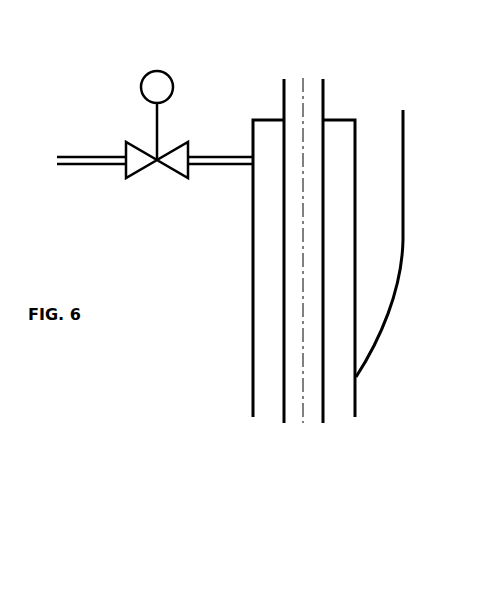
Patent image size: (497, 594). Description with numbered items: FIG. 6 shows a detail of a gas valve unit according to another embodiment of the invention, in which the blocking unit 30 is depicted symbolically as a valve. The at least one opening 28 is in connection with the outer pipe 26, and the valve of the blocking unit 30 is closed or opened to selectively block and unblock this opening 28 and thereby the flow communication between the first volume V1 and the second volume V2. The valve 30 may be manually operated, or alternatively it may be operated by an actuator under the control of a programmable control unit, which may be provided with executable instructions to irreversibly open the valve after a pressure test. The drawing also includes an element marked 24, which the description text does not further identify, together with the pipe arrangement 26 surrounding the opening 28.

The housing 24 is at (325, 407).
The outer pipe 26 is at (356, 397).
The opening 28 is at (257, 157).
The blocking unit 30 is at (127, 140).
The first volume V1 is at (268, 380).
The second volume V2 is at (54, 128).